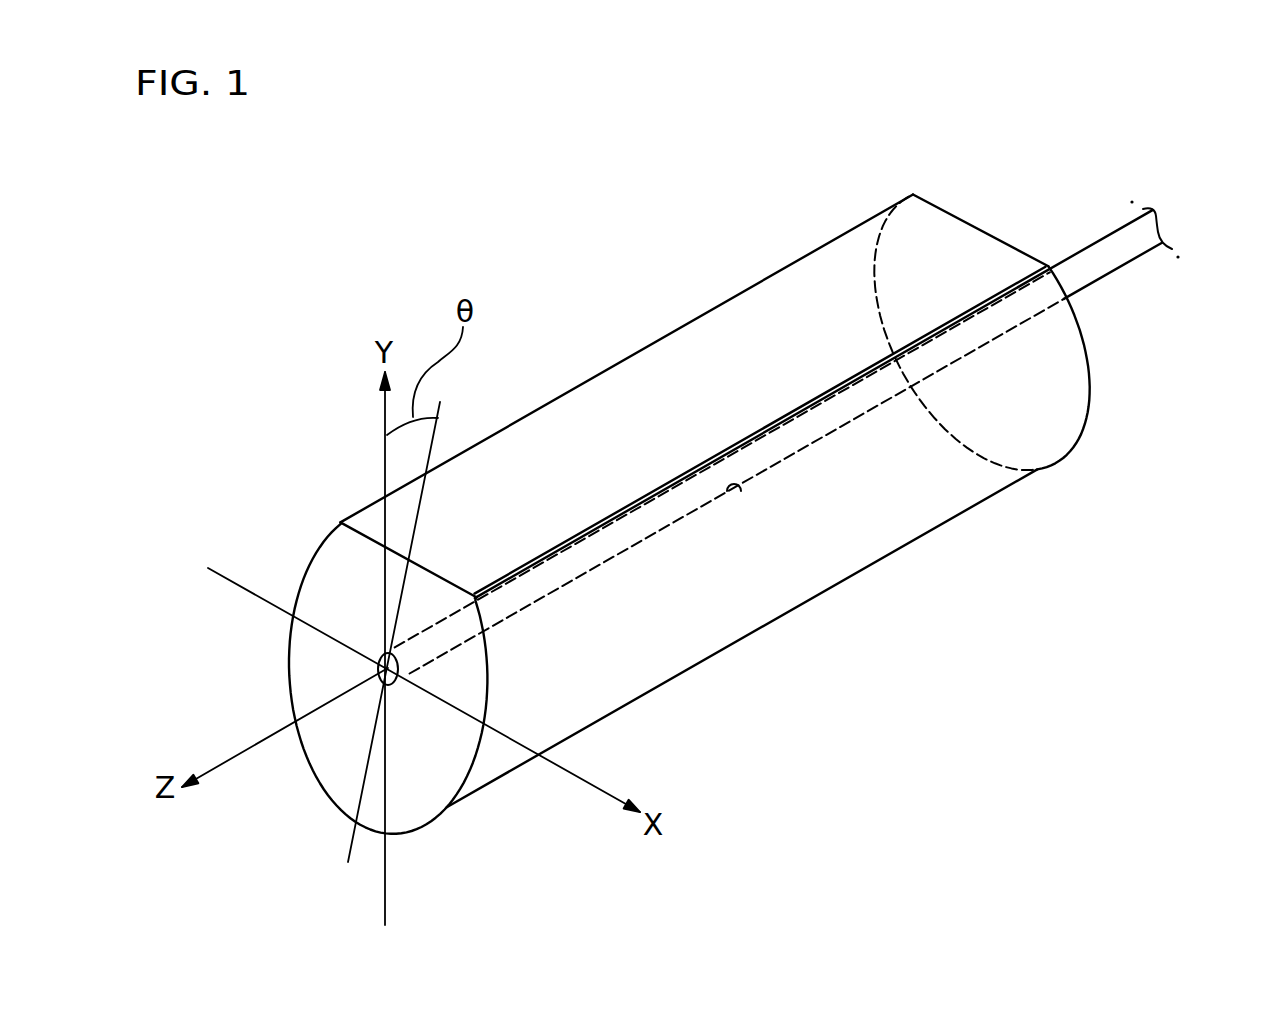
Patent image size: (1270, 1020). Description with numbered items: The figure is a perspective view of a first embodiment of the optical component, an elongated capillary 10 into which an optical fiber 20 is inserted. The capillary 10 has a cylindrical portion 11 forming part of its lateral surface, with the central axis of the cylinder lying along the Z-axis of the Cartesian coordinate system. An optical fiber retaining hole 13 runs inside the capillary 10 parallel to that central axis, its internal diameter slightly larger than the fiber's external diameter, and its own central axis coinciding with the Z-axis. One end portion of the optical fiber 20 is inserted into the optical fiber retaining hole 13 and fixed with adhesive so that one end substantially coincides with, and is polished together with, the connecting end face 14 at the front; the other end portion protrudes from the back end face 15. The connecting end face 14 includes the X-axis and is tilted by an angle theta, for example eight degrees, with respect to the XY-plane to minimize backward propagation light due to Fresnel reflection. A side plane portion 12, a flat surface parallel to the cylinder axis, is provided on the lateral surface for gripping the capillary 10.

The capillary 10 is at (320, 483).
The cylindrical portion 11 is at (885, 531).
The side plane portion 12 is at (675, 367).
The optical fiber retaining hole 13 is at (741, 487).
The connecting end face 14 is at (320, 672).
The back end face 15 is at (1027, 402).
The optical fiber 20 is at (1110, 249).